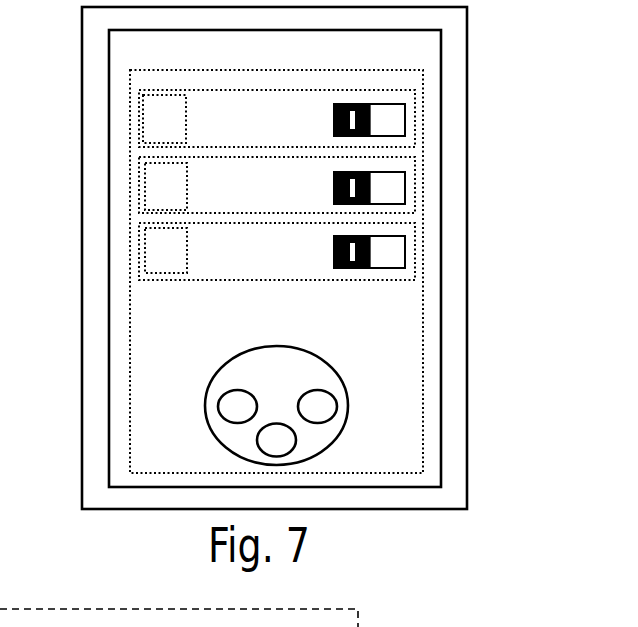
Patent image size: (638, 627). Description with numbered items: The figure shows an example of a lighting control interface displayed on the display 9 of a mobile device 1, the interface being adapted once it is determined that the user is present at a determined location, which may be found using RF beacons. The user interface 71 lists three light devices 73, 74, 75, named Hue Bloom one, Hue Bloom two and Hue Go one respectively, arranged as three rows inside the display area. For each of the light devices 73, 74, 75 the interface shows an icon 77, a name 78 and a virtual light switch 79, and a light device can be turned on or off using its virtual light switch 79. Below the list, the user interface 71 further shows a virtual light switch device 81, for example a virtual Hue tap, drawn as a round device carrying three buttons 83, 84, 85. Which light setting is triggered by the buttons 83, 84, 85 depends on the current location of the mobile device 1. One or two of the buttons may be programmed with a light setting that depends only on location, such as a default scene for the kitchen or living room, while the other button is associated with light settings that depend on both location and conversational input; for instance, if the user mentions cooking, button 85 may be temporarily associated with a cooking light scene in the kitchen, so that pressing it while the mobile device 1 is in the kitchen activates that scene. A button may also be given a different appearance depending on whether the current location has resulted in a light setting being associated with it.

The mobile device 1 is at (466, 33).
The display 9 is at (108, 478).
The user interface 71 is at (130, 440).
The light device 73 is at (145, 120).
The light device 74 is at (145, 188).
The light device 75 is at (231, 277).
The icon 77 is at (162, 273).
The name 78 is at (237, 263).
The virtual light switch 79 is at (369, 268).
The virtual light switch device 81 is at (304, 405).
The button 83 is at (237, 406).
The button 84 is at (317, 406).
The button 85 is at (276, 440).